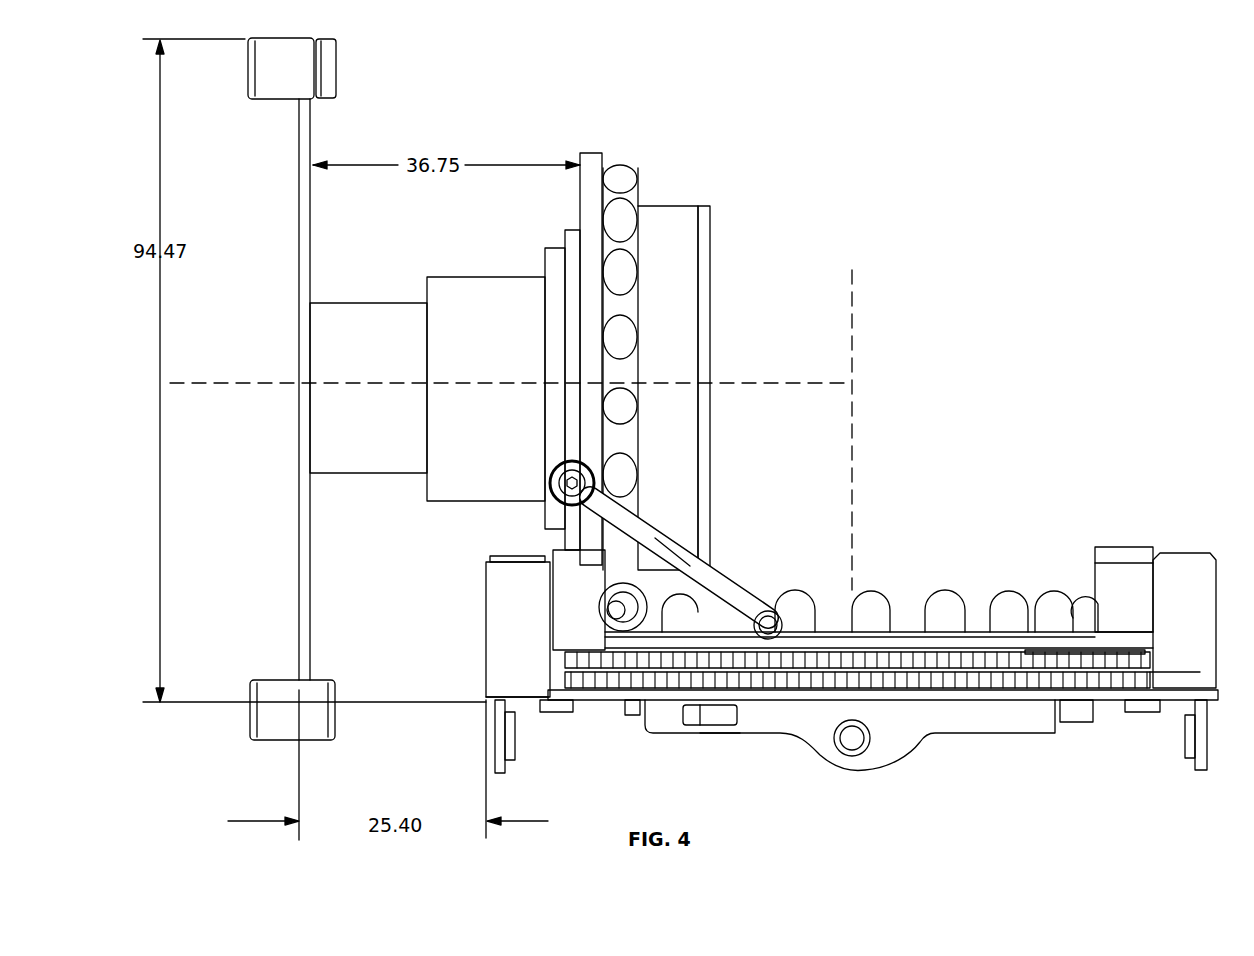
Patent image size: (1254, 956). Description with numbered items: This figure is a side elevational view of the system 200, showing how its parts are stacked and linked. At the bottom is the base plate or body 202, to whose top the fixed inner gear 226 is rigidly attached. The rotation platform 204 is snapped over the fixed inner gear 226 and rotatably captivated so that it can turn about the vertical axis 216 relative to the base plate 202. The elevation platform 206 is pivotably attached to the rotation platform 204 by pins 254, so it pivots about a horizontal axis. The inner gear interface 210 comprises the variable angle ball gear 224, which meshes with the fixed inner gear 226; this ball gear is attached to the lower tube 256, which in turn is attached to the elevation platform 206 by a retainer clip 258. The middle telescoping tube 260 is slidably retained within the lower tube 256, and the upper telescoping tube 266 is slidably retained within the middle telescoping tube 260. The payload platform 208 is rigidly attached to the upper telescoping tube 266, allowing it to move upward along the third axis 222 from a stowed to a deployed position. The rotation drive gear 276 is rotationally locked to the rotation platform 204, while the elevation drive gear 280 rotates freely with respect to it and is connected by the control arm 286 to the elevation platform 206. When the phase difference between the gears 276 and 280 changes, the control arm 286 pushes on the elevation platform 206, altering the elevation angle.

The system 200 is at (992, 188).
The base plate 202 is at (1000, 716).
The rotation platform 204 is at (900, 640).
The elevation platform 206 is at (588, 160).
The payload platform 208 is at (298, 550).
The inner gear interface 210 is at (742, 535).
The vertical axis 216 is at (856, 340).
The third axis 222 is at (246, 376).
The variable angle ball gear 224 is at (626, 186).
The fixed inner gear 226 is at (873, 600).
The pins 254 is at (618, 610).
The lower tube 256 is at (670, 262).
The retainer clip 258 is at (573, 232).
The middle telescoping tube 260 is at (457, 465).
The upper telescoping tube 266 is at (388, 326).
The rotation drive gear 276 is at (942, 684).
The elevation drive gear 280 is at (975, 658).
The control arm 286 is at (738, 600).